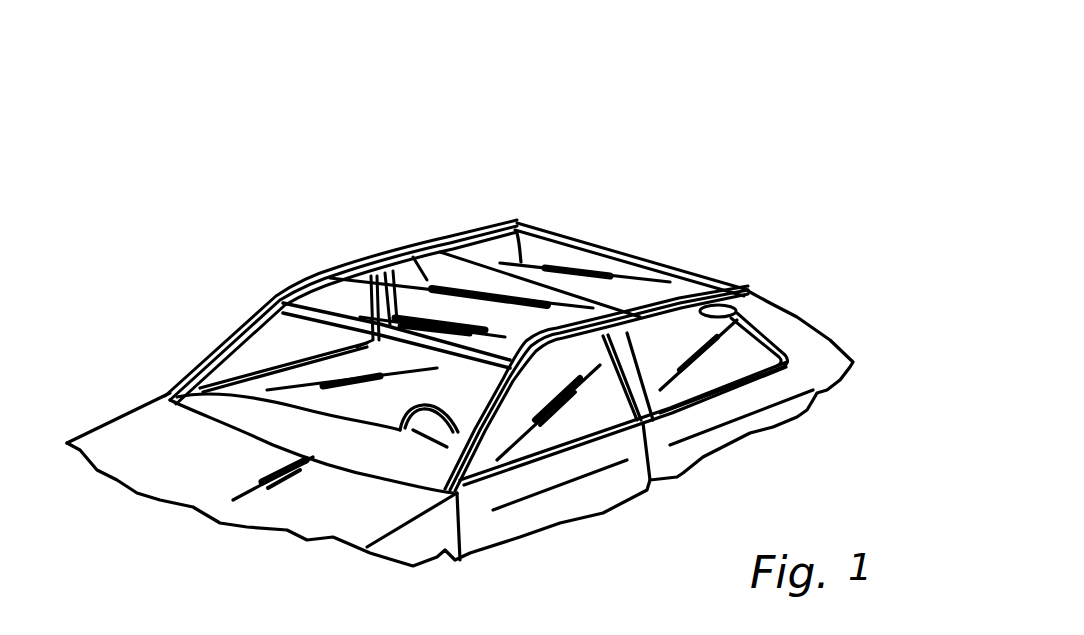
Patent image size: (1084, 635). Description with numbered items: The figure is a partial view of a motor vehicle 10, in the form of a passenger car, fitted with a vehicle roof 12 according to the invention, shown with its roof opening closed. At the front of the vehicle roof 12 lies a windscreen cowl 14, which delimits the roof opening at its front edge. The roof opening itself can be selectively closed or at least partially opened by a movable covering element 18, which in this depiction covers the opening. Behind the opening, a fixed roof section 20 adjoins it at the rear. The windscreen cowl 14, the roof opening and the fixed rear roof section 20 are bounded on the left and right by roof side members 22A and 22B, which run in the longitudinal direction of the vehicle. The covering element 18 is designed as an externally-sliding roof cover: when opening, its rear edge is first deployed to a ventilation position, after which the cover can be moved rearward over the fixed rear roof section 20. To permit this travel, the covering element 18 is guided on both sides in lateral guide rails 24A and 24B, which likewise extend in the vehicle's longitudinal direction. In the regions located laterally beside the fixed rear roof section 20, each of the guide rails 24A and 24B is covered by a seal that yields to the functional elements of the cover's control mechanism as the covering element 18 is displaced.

The motor vehicle 10 is at (789, 86).
The vehicle roof 12 is at (605, 232).
The windscreen cowl 14 is at (340, 303).
The covering element 18 is at (397, 243).
The fixed roof section 20 is at (503, 223).
The roof side member 22A is at (757, 303).
The roof side member 22B is at (314, 278).
The guide rail 24A is at (748, 291).
The guide rail 24B is at (433, 237).